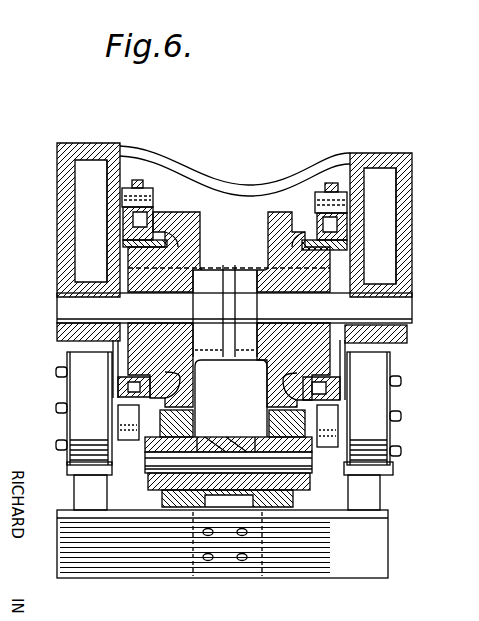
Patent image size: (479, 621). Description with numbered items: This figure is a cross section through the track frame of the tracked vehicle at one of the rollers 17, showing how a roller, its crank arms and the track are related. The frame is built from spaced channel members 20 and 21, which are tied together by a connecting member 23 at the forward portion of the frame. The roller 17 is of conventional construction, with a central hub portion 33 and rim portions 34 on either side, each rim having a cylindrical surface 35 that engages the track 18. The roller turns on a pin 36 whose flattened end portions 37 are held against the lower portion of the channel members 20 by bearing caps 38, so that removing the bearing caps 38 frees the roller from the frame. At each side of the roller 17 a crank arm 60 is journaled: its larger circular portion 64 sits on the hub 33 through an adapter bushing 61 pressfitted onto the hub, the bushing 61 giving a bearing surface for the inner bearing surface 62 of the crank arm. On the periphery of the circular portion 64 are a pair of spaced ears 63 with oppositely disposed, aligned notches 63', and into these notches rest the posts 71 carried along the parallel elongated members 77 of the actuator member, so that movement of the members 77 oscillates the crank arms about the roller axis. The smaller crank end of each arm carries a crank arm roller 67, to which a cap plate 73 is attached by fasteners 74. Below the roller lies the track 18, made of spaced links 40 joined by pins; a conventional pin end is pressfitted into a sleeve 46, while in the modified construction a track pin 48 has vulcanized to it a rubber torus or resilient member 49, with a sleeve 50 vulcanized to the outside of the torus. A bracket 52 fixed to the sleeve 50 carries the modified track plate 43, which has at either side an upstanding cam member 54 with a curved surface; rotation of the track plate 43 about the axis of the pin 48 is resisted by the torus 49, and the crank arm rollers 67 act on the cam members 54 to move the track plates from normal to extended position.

The roller 17 is at (254, 368).
The track 18 is at (60, 537).
The channel member 20 is at (57, 163).
The channel member 21 is at (413, 185).
The connecting member 23 is at (250, 188).
The hub portion 33 is at (229, 297).
The rim portion 34 is at (193, 212).
The cylindrical surface 35 is at (275, 213).
The pin 36 is at (234, 308).
The flattened end portion 37 is at (70, 296).
The bearing cap 38 is at (58, 326).
The link 40 is at (192, 507).
The track plate 43 is at (80, 560).
The sleeve 46 is at (60, 538).
The track pin 48 is at (298, 473).
The resilient member 49 is at (238, 437).
The sleeve 50 is at (213, 436).
The bracket 52 is at (248, 533).
The cam member 54 is at (74, 496).
The crank arm 60 is at (128, 405).
The adapter bushing 61 is at (126, 246).
The inner bearing surface 62 is at (352, 398).
The ear 63 is at (238, 209).
The notch 63' is at (294, 156).
The circular portion 64 is at (125, 243).
The crank arm roller 67 is at (68, 468).
The post 71 is at (120, 199).
The cap plate 73 is at (67, 417).
The fastener 74 is at (56, 447).
The elongated member 77 is at (138, 189).